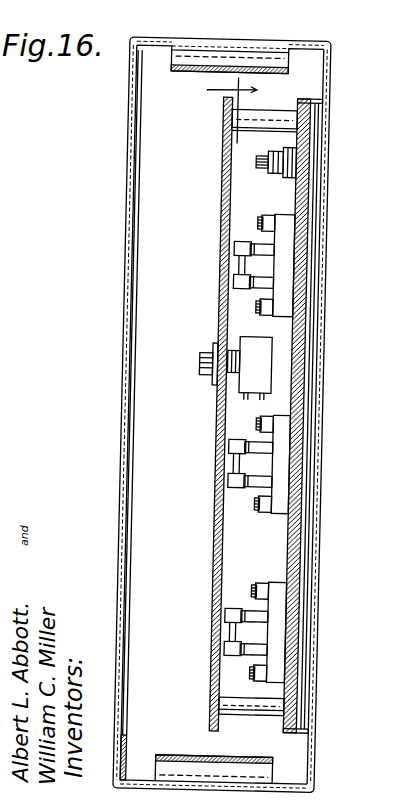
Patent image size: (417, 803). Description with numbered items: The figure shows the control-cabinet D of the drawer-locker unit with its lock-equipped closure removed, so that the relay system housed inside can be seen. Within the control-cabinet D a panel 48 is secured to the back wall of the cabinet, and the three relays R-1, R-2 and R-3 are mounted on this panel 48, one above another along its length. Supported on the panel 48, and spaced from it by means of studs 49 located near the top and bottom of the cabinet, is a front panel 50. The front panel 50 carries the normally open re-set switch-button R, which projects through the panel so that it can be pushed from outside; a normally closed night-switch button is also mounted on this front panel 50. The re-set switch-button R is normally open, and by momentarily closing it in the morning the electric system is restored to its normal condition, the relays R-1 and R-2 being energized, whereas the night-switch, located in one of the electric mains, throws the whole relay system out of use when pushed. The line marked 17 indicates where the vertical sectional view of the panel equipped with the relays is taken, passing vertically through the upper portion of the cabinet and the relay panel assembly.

The section line 17 is at (227, 107).
The panel 48 is at (307, 348).
The studs 49 is at (274, 109).
The front panel 50 is at (226, 508).
The control-cabinet D is at (130, 124).
The re-set switch-button R is at (208, 374).
The relay R-1 is at (288, 253).
The relay R-2 is at (288, 464).
The relay R-3 is at (291, 618).